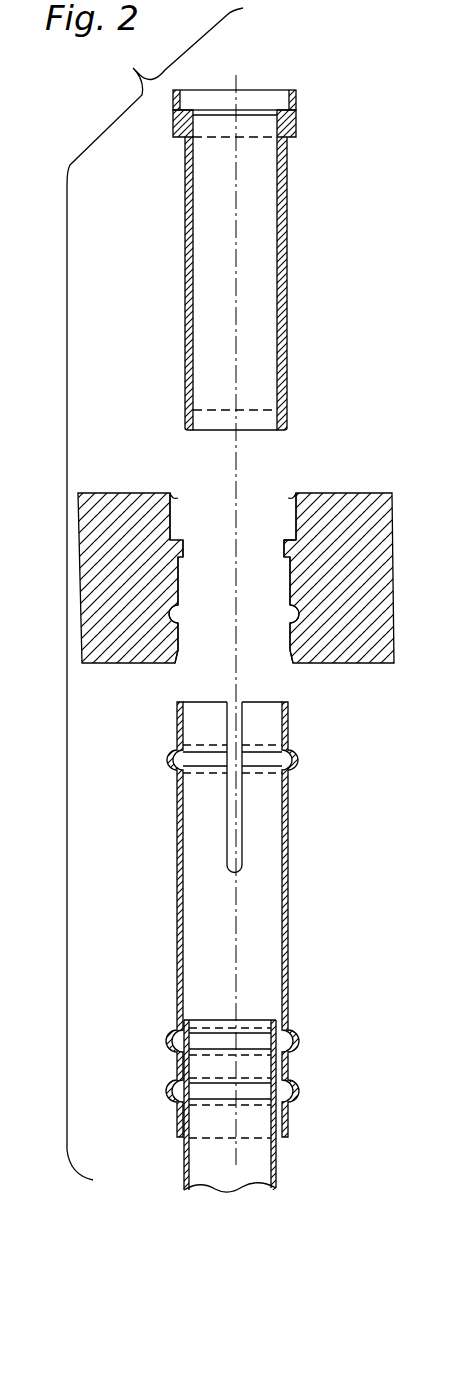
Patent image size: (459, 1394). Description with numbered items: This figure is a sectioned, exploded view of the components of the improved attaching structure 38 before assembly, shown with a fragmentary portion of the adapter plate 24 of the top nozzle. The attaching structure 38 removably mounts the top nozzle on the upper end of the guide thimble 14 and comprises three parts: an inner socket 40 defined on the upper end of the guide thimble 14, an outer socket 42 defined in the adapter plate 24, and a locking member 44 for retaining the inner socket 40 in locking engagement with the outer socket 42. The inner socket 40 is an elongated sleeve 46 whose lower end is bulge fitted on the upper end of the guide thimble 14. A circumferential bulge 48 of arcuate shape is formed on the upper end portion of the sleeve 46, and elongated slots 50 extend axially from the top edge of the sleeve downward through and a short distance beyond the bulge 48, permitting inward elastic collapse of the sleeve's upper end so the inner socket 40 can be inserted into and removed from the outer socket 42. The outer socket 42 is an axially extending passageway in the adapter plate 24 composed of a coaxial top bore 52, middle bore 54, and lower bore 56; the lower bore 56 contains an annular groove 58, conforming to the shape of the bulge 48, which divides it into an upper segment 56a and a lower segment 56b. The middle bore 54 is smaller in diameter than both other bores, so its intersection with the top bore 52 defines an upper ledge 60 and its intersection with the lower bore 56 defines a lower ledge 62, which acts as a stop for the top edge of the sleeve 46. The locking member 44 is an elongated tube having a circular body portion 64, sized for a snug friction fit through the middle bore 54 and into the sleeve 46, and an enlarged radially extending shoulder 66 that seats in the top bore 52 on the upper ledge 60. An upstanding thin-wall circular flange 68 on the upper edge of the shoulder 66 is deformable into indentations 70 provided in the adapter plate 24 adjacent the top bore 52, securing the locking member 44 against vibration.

The guide thimble 14 is at (278, 1167).
The adapter plate 24 is at (354, 664).
The attaching structure 38 is at (92, 133).
The inner socket 40 is at (263, 920).
The outer socket 42 is at (263, 573).
The locking member 44 is at (261, 248).
The sleeve 46 is at (290, 992).
The circumferential bulge 48 is at (297, 761).
The elongated slot 50 is at (239, 857).
The top bore 52 is at (268, 525).
The middle bore 54 is at (183, 546).
The lower bore 56 is at (268, 590).
The upper segment 56a is at (289, 578).
The lower segment 56b is at (289, 633).
The annular groove 58 is at (172, 623).
The upper ledge 60 is at (292, 536).
The lower ledge 62 is at (288, 548).
The body portion 64 is at (289, 310).
The shoulder 66 is at (297, 131).
The flange 68 is at (297, 100).
The indentations 70 is at (168, 495).